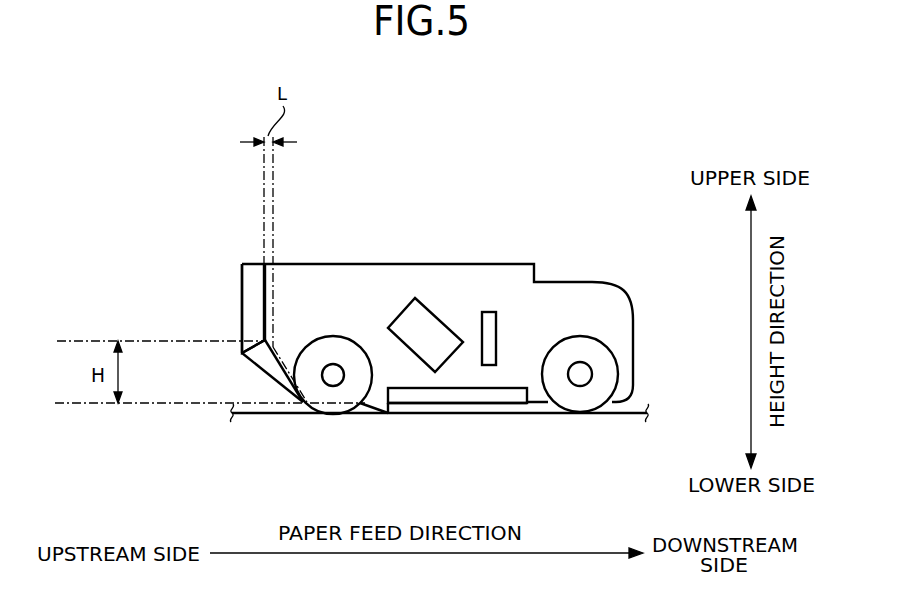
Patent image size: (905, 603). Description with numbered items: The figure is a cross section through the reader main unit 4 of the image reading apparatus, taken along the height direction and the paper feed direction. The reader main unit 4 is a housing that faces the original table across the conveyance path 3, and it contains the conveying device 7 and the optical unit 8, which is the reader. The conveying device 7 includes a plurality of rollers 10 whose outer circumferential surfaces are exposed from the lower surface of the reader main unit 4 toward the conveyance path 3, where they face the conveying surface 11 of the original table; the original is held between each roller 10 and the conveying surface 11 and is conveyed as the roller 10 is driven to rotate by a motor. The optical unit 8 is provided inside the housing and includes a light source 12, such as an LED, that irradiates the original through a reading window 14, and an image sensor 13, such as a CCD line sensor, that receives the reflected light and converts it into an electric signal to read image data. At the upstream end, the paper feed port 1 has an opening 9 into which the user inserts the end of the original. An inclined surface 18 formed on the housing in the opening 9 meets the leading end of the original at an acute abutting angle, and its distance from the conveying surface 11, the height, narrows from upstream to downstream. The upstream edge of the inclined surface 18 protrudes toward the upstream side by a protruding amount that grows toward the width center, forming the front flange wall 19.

The paper feed port 1 is at (215, 380).
The conveyance path 3 is at (508, 426).
The reader main unit 4 is at (586, 272).
The conveying device 7 is at (490, 135).
The optical unit 8 is at (485, 232).
The opening 9 is at (273, 397).
The roller 10 is at (342, 347).
The conveying surface 11 is at (431, 411).
The light source 12 is at (437, 313).
The image sensor 13 is at (479, 322).
The reading window 14 is at (412, 403).
The inclined surface 18 is at (276, 358).
The front flange wall 19 is at (264, 305).